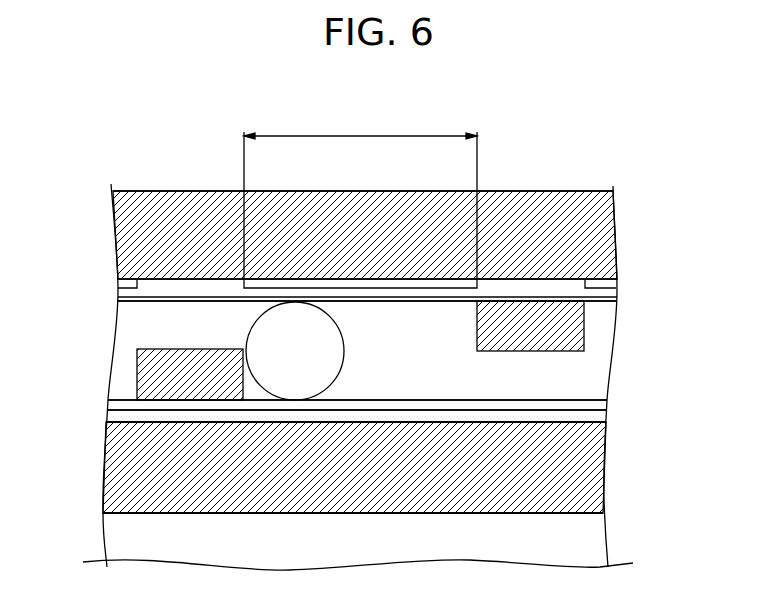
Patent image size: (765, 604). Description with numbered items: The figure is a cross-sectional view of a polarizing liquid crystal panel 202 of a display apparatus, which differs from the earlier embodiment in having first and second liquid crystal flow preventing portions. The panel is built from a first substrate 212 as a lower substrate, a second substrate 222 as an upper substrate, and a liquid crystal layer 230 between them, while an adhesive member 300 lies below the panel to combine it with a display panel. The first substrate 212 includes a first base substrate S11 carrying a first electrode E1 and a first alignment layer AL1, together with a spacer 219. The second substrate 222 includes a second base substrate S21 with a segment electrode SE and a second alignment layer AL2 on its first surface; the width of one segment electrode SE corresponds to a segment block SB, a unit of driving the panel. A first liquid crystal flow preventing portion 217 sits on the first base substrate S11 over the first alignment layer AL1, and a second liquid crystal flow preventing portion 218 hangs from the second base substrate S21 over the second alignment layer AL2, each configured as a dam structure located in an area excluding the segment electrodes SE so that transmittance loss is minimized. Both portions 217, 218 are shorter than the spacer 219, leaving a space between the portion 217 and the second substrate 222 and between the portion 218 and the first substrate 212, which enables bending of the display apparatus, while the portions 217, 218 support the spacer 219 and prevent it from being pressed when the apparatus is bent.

The polarizing liquid crystal panel 202 is at (561, 165).
The second substrate 222 is at (420, 256).
The second base substrate S21 is at (607, 230).
The segment electrode SE is at (596, 285).
The second alignment layer AL2 is at (398, 309).
The segment block SB is at (360, 197).
The liquid crystal layer 230 is at (374, 348).
The second liquid crystal flow preventing portion 218 is at (578, 330).
The spacer 219 is at (257, 314).
The first liquid crystal flow preventing portion 217 is at (143, 375).
The first substrate 212 is at (415, 454).
The first alignment layer AL1 is at (605, 404).
The first electrode E1 is at (604, 419).
The first base substrate S11 is at (391, 467).
The adhesive member 300 is at (115, 535).